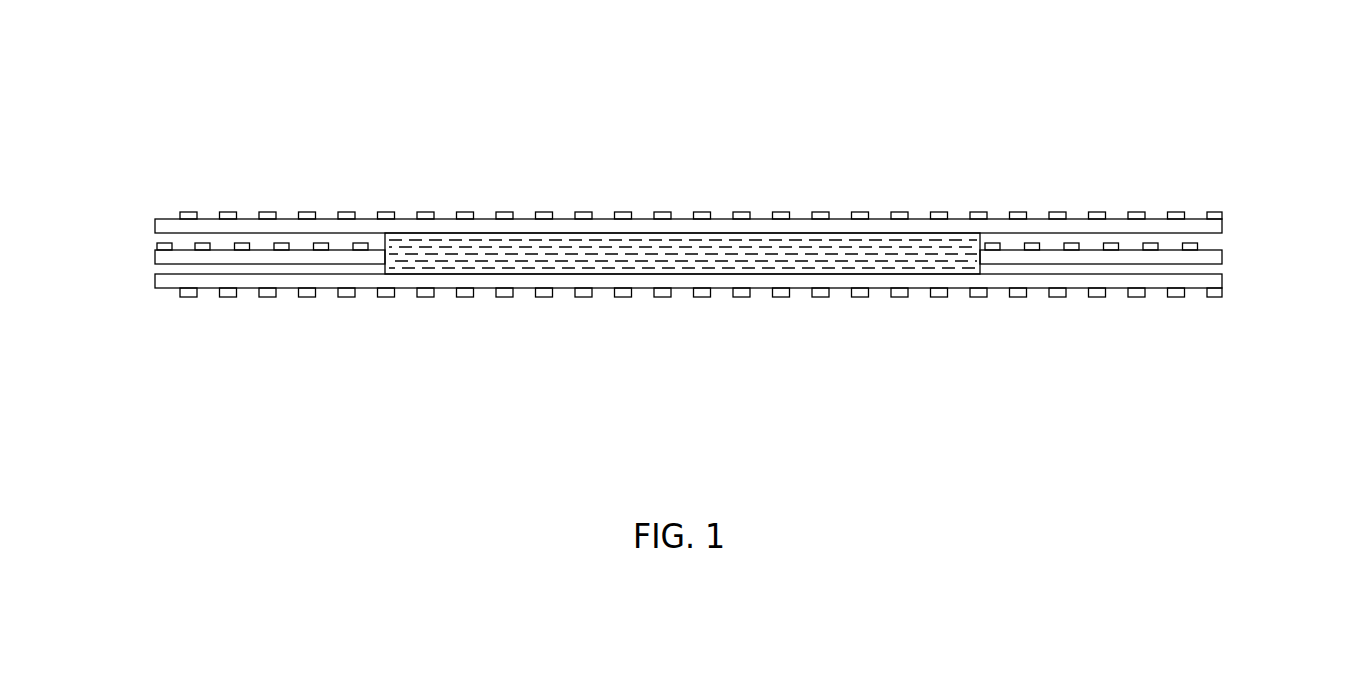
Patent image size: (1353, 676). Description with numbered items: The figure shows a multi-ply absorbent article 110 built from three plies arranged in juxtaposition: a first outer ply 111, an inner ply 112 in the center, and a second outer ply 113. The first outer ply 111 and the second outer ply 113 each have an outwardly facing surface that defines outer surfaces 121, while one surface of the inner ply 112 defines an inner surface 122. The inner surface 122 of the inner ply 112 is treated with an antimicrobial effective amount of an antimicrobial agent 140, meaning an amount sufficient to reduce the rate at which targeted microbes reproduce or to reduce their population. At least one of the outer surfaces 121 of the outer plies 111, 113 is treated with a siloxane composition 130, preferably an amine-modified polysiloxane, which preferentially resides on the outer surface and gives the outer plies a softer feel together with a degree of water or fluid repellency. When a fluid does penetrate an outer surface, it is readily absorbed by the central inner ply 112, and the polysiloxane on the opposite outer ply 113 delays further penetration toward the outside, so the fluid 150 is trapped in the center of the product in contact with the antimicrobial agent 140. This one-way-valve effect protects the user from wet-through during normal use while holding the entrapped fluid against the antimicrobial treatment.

The multi-ply absorbent article 110 is at (702, 208).
The first outer ply 111 is at (1222, 224).
The inner ply 112 is at (1222, 258).
The second outer ply 113 is at (1222, 283).
The outer surfaces 121 is at (1114, 218).
The inner surface 122 is at (1200, 218).
The siloxane composition 130 is at (308, 213).
The antimicrobial agent 140 is at (198, 247).
The fluid 150 is at (580, 252).